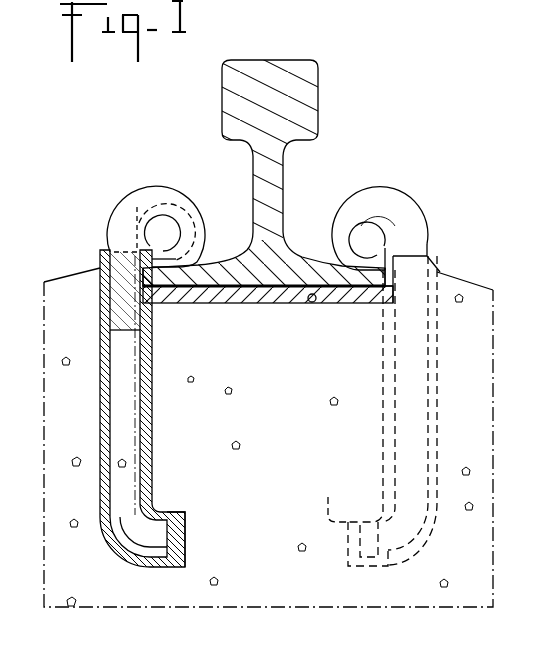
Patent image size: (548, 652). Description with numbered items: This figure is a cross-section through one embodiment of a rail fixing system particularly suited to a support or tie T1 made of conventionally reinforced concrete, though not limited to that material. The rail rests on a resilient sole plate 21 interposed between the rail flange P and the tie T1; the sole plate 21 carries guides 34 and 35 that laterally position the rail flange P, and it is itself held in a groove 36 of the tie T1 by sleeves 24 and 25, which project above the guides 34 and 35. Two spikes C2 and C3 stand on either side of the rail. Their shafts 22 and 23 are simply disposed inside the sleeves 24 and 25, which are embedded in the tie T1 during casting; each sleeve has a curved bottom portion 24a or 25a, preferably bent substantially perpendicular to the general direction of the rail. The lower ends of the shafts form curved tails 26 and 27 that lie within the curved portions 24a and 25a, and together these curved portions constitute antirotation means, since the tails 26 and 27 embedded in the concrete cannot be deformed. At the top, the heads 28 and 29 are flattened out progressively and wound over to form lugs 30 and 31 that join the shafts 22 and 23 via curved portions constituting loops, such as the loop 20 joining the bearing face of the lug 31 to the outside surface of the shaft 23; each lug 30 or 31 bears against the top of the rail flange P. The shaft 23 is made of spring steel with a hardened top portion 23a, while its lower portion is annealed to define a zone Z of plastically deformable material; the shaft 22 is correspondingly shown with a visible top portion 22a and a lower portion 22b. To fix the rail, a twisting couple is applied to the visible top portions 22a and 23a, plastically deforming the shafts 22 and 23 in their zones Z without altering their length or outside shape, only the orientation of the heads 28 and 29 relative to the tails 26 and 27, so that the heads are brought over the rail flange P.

The rail flange P is at (283, 248).
The loop 20 is at (207, 236).
The resilient sole plate 21 is at (276, 297).
The shaft 22 is at (125, 406).
The top portion 22a is at (175, 183).
The inner leg of left clip 22b is at (132, 466).
The shaft 23 is at (410, 418).
The top portion 23a is at (418, 203).
The sleeve 24 is at (198, 416).
The curved bottom portion 24a is at (180, 512).
The sleeve 25 is at (383, 445).
The curved bottom portion 25a is at (326, 502).
The curved tail 26 is at (167, 538).
The curved tail 27 is at (368, 571).
The head 28 is at (213, 262).
The head 29 is at (344, 270).
The lug 30 is at (188, 272).
The lug 31 is at (358, 287).
The guide 34 is at (147, 283).
The guide 35 is at (388, 305).
The groove 36 is at (311, 304).
The zone of plastically deformable material Z is at (127, 283).
The spike C2 is at (112, 365).
The spike C3 is at (421, 391).
The tie T1 is at (289, 608).